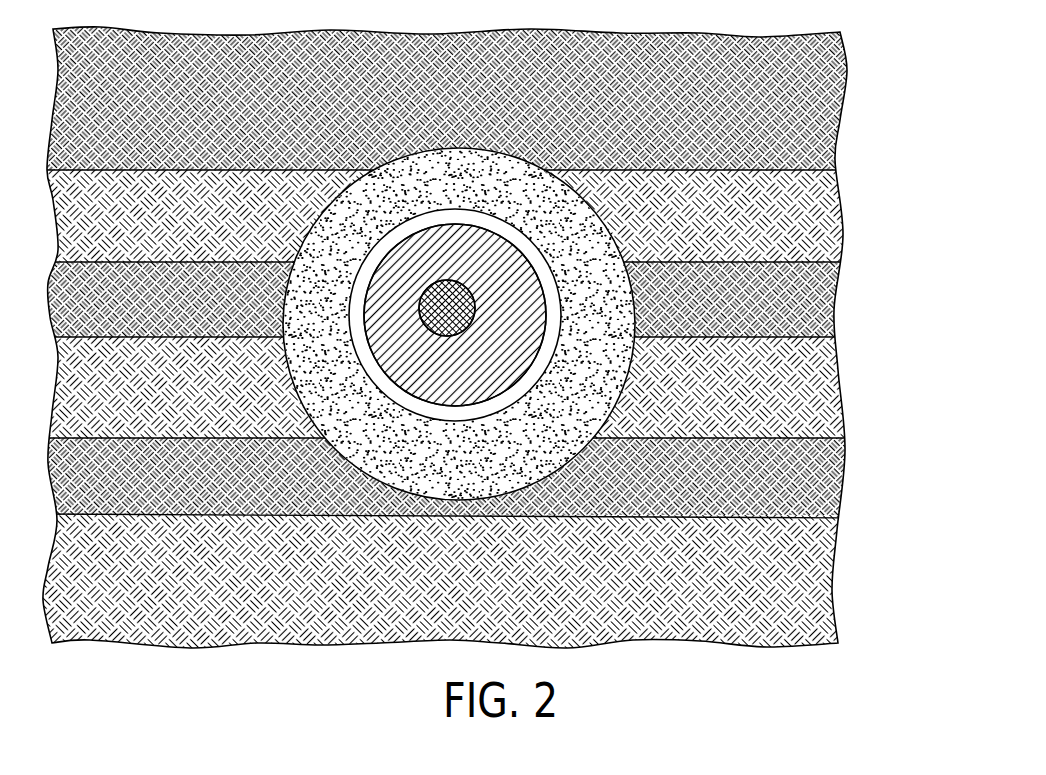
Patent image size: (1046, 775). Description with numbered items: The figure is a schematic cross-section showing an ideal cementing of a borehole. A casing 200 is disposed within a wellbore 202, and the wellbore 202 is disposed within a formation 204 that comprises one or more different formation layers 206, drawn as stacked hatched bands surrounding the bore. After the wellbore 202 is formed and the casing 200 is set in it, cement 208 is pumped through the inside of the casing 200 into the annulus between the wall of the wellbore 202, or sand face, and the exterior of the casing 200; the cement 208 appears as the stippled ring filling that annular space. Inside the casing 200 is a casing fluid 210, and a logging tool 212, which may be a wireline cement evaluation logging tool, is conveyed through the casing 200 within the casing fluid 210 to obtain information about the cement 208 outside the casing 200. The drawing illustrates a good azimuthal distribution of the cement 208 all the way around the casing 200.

The casing 200 is at (413, 410).
The wellbore 202 is at (408, 478).
The formation 204 is at (875, 30).
The formation layers 206 is at (782, 383).
The cement 208 is at (323, 330).
The casing fluid 210 is at (497, 358).
The logging tool 212 is at (428, 280).